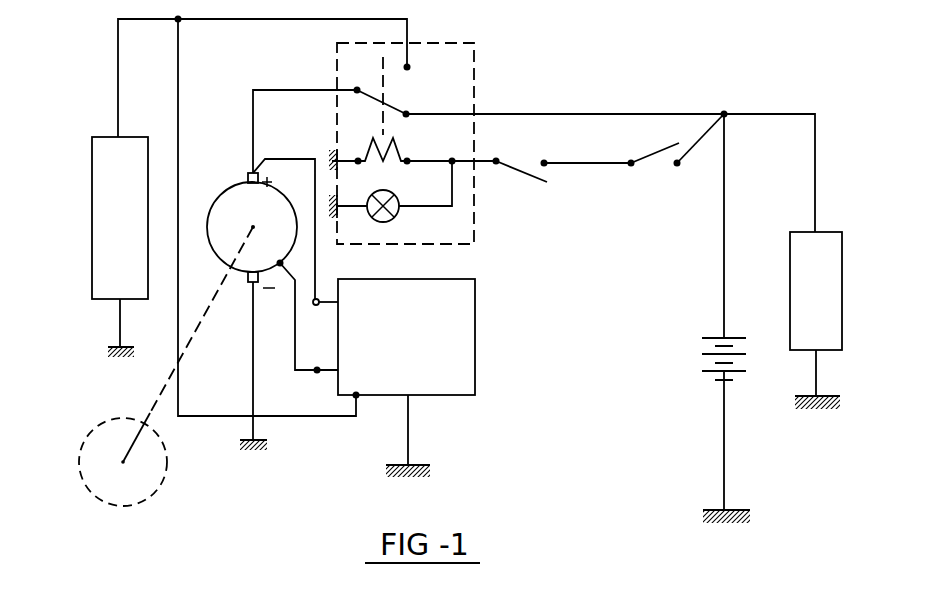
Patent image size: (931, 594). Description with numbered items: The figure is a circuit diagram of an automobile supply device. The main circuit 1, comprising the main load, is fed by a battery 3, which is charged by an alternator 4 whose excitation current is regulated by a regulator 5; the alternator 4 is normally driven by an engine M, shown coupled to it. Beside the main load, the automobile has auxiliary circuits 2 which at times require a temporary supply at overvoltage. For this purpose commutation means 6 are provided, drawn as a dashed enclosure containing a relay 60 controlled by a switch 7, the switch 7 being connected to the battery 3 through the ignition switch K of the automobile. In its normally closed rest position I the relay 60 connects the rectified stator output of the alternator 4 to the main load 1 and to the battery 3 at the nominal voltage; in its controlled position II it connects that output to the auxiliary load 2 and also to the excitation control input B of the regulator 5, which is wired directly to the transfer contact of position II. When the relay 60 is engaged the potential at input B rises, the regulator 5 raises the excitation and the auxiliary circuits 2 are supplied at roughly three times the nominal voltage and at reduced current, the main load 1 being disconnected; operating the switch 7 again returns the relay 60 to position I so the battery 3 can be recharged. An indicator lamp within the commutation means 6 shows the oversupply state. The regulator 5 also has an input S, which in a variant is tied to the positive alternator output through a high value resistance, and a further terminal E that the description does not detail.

The main circuit 1 is at (790, 262).
The auxiliary circuits 2 is at (130, 158).
The battery 3 is at (702, 371).
The alternator 4 is at (224, 192).
The regulator 5 is at (391, 385).
The commutation means 6 is at (465, 92).
The switch 7 is at (527, 176).
The relay 60 is at (369, 91).
The ignition switch K is at (662, 152).
The engine M is at (157, 476).
The input S is at (314, 304).
The E terminal E is at (319, 343).
The control input for excitation B is at (352, 397).
The normally closed position I is at (420, 96).
The controlled position II is at (410, 67).